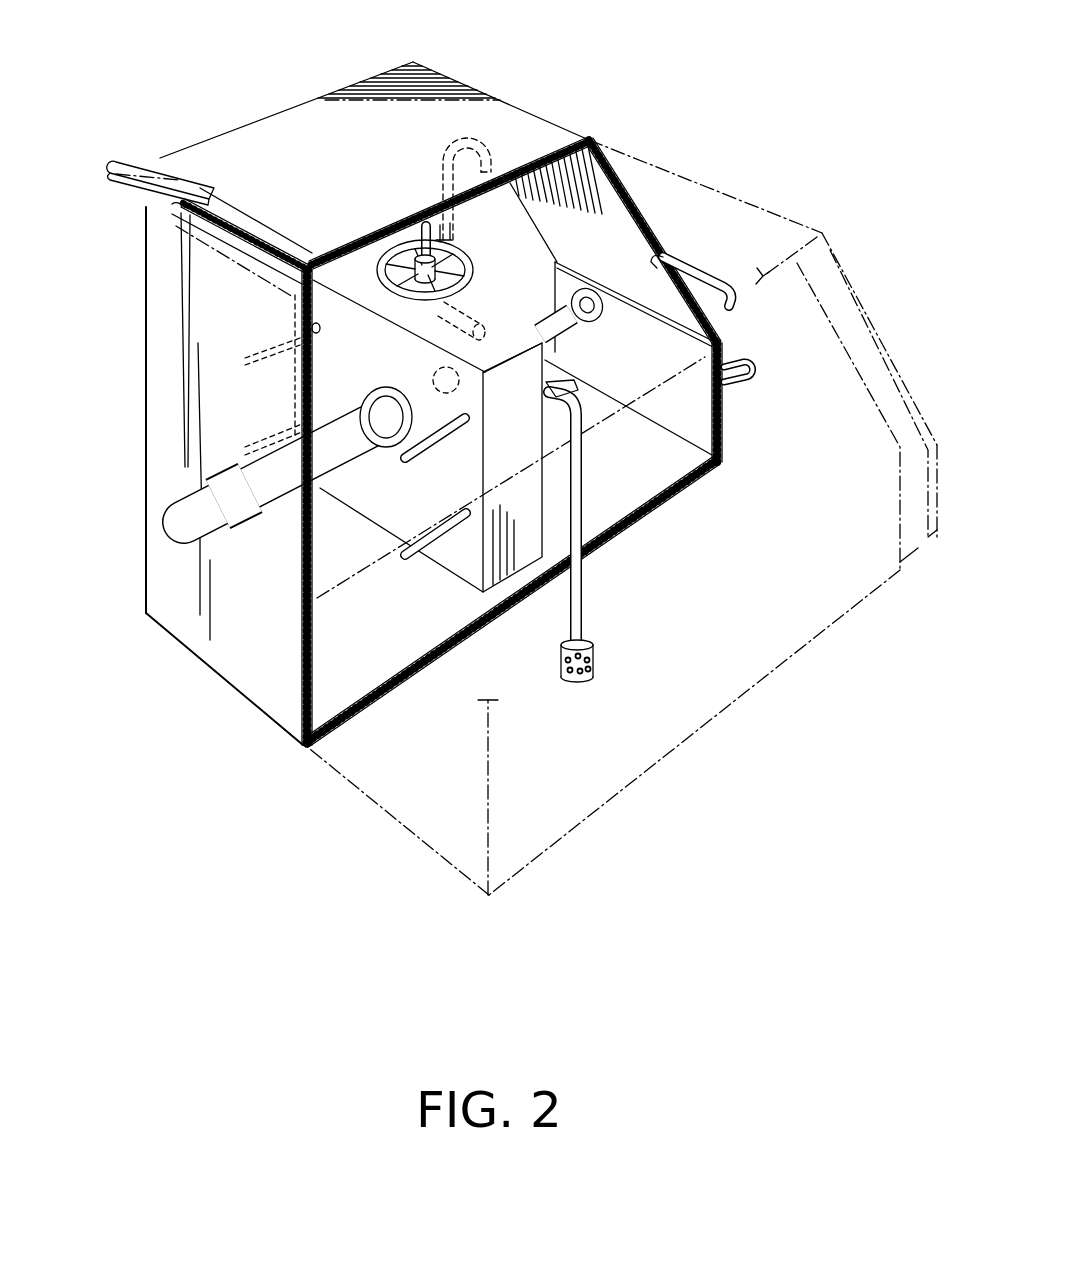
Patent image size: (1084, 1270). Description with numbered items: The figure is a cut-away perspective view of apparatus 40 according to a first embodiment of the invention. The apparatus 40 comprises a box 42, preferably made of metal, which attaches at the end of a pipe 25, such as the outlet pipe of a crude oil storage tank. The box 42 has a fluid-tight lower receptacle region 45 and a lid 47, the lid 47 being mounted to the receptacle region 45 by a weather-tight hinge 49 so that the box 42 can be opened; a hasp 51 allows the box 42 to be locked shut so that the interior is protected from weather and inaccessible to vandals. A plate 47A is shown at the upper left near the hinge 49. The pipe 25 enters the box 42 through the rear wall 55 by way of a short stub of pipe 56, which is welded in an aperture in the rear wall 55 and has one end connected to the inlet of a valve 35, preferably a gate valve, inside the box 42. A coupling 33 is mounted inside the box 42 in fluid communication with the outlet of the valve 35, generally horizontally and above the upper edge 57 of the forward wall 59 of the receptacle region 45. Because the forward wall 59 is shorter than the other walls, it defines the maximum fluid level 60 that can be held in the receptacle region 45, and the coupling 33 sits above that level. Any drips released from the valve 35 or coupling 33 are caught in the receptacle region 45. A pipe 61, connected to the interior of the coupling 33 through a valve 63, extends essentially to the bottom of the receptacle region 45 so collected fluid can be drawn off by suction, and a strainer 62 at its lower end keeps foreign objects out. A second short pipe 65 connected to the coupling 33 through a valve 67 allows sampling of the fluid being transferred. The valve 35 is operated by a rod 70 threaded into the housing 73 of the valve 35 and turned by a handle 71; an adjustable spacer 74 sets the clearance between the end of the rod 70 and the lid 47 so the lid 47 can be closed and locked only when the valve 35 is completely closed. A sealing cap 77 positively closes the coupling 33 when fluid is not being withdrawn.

The pipe 25 is at (190, 517).
The coupling 33 is at (548, 318).
The valve 35 is at (463, 565).
The apparatus 40 is at (655, 75).
The box 42 is at (785, 193).
The receptacle region 45 is at (687, 457).
The lid 47 is at (653, 170).
The mounting plate 47A is at (142, 170).
The hinge 49 is at (225, 218).
The hasp 51 is at (752, 373).
The rear wall 55 is at (243, 667).
The stub of pipe 56 is at (278, 484).
The upper edge 57 is at (575, 262).
The forward wall 59 is at (725, 438).
The maximum fluid level 60 is at (727, 320).
The pipe 61 is at (582, 605).
The strainer 62 is at (595, 657).
The valve 63 is at (568, 388).
The second short pipe 65 is at (486, 140).
The valve 67 is at (482, 317).
The rod 70 is at (423, 312).
The handle 71 is at (373, 252).
The housing 73 is at (305, 298).
The adjustable spacer 74 is at (407, 238).
The sealing cap 77 is at (603, 308).